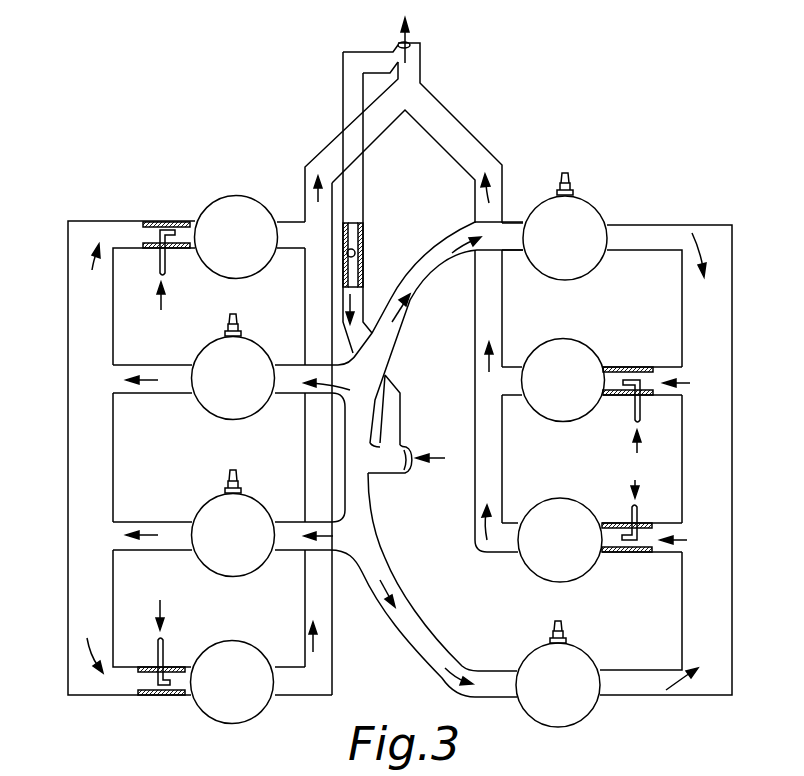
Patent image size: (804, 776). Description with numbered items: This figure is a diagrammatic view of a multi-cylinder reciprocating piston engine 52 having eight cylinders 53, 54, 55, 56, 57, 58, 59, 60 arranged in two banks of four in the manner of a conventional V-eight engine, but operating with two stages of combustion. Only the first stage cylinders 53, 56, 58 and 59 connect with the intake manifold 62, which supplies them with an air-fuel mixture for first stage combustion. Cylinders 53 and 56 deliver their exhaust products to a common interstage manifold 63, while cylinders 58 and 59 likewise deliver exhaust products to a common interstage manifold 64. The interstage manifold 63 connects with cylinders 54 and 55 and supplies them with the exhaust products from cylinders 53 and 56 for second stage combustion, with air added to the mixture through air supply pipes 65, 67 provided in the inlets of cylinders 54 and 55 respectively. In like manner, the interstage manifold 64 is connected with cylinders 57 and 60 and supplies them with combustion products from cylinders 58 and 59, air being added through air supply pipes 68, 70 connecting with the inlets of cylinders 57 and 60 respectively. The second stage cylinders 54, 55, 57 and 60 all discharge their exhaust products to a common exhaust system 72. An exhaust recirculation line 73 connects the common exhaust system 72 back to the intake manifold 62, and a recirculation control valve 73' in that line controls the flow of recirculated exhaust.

The multi-cylinder reciprocating piston engine 52 is at (617, 213).
The cylinder 53 is at (580, 705).
The cylinder 54 is at (545, 560).
The cylinder 55 is at (573, 412).
The cylinder 56 is at (582, 262).
The cylinder 57 is at (250, 705).
The cylinder 58 is at (233, 567).
The cylinder 59 is at (233, 402).
The cylinder 60 is at (240, 207).
The intake manifold 62 is at (380, 353).
The interstage manifold 63 is at (720, 385).
The interstage manifold 64 is at (82, 452).
The air supply pipe 65 is at (637, 513).
The air supply pipe 67 is at (640, 412).
The air supply pipe 68 is at (157, 648).
The air supply pipe 70 is at (160, 260).
The common exhaust system 72 is at (455, 135).
The exhaust recirculation line 73 is at (377, 199).
The recirculation control valve 73' is at (378, 255).